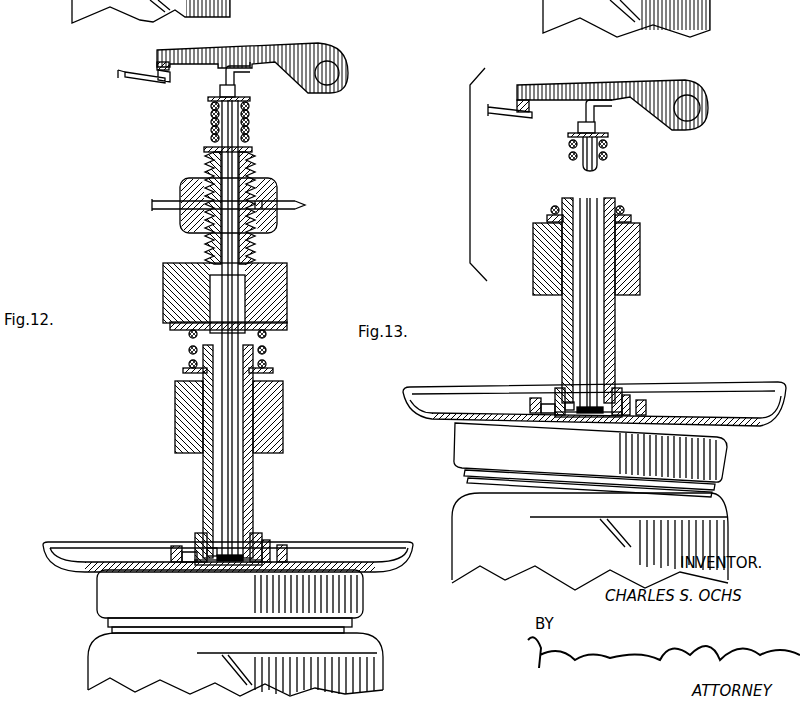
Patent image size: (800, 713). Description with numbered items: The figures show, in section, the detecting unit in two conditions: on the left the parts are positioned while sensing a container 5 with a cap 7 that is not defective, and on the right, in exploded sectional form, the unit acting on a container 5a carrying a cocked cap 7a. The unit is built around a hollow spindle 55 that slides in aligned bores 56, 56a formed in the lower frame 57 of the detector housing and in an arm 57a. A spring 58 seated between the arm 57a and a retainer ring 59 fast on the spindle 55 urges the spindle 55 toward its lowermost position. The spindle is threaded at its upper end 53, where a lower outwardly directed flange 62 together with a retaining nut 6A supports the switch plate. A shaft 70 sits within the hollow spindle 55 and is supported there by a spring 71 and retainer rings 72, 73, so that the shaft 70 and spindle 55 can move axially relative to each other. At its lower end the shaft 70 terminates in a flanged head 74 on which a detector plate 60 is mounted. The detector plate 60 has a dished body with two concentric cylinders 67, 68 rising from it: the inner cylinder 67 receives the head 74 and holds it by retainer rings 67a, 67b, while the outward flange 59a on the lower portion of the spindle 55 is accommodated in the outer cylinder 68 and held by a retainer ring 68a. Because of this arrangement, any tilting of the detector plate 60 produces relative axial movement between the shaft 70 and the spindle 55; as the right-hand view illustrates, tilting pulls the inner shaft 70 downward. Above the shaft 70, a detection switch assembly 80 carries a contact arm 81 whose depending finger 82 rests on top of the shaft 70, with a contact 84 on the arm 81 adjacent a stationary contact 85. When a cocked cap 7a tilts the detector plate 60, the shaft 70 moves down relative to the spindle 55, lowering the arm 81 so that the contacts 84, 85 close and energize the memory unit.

In FIG. 12, the container jar 5 is at (90, 657).
In FIG. 13, the container jar 5a is at (730, 525).
In FIG. 12, the cap 7 is at (360, 597).
In FIG. 13, the cap 7a is at (720, 465).
In FIG. 12, the adjusting nut 6A is at (165, 190).
In FIG. 12, the upper end 53 is at (250, 163).
In FIG. 12, the hollow spindle 55 is at (206, 490).
In FIG. 13, the hollow spindle 55 is at (572, 348).
In FIG. 12, the bore 56 is at (203, 378).
In FIG. 13, the bore 56 is at (612, 253).
In FIG. 12, the bore 56a is at (190, 331).
In FIG. 12, the lower frame 57 is at (283, 412).
In FIG. 13, the lower frame 57 is at (640, 281).
In FIG. 12, the arm 57a is at (287, 298).
In FIG. 12, the spring 58 is at (266, 348).
In FIG. 13, the spring 58 is at (555, 206).
In FIG. 12, the retainer ring 59 is at (270, 370).
In FIG. 13, the retainer ring 59 is at (630, 216).
In FIG. 12, the outward flange 59a is at (284, 547).
In FIG. 13, the outward flange 59a is at (634, 402).
In FIG. 12, the detector plate 60 is at (408, 546).
In FIG. 13, the detector plate 60 is at (773, 411).
In FIG. 12, the lower outwardly directed flange 62 is at (300, 205).
In FIG. 12, the inner cylinder 67 is at (210, 566).
In FIG. 13, the inner cylinder 67 is at (565, 419).
In FIG. 12, the retainer ring 67a is at (224, 566).
In FIG. 13, the retainer ring 67a is at (580, 420).
In FIG. 12, the retainer ring 67b is at (255, 545).
In FIG. 13, the retainer ring 67b is at (617, 383).
In FIG. 12, the outer cylinder 68 is at (170, 554).
In FIG. 13, the outer cylinder 68 is at (526, 404).
In FIG. 12, the retainer ring 68a is at (190, 551).
In FIG. 13, the retainer ring 68a is at (545, 398).
In FIG. 12, the shaft 70 is at (232, 122).
In FIG. 13, the shaft 70 is at (600, 169).
In FIG. 12, the spring 71 is at (210, 116).
In FIG. 13, the spring 71 is at (607, 156).
In FIG. 12, the retainer ring 72 is at (205, 148).
In FIG. 12, the retainer ring 73 is at (212, 98).
In FIG. 13, the retainer ring 73 is at (607, 136).
In FIG. 12, the flanged head 74 is at (233, 563).
In FIG. 13, the flanged head 74 is at (597, 416).
In FIG. 12, the detection switch assembly 80 is at (170, 39).
In FIG. 13, the detection switch assembly 80 is at (608, 81).
In FIG. 12, the contact arm 81 is at (301, 40).
In FIG. 13, the contact arm 81 is at (674, 86).
In FIG. 12, the depending finger 82 is at (238, 80).
In FIG. 13, the depending finger 82 is at (598, 114).
In FIG. 12, the contact 84 is at (155, 57).
In FIG. 13, the contact 84 is at (530, 103).
In FIG. 12, the stationary contact 85 is at (150, 80).
In FIG. 13, the stationary contact 85 is at (526, 118).